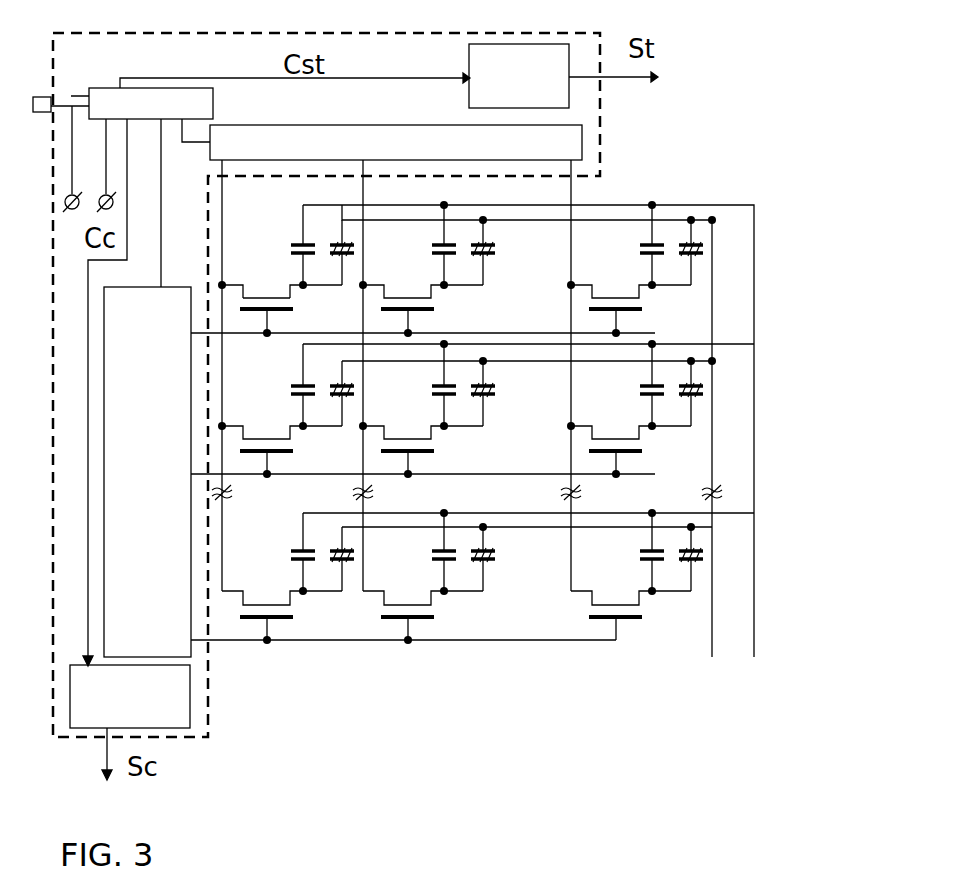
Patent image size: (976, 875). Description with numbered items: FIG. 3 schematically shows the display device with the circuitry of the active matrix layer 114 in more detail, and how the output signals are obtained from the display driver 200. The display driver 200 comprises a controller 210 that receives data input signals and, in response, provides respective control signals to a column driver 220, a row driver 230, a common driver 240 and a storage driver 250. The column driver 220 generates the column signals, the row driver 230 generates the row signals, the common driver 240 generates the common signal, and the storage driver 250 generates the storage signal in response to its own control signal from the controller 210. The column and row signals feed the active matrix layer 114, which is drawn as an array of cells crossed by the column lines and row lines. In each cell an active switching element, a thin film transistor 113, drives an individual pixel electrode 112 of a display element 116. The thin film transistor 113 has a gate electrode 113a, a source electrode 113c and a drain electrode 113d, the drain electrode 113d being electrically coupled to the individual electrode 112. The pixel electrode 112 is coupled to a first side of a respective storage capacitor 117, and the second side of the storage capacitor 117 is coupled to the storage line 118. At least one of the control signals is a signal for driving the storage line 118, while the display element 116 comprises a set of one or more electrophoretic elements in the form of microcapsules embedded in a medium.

The display driver 200 is at (116, 66).
The controller 210 is at (205, 93).
The column driver 220 is at (287, 137).
The row driver 230 is at (183, 640).
The common driver 240 is at (179, 705).
The storage driver 250 is at (478, 87).
The individual electrode 112 is at (315, 259).
The thin film transistor 113 is at (288, 289).
The gate electrode 113a is at (268, 327).
The source electrode 113c is at (232, 280).
The drain electrode 113d is at (290, 290).
The active matrix layer 114 is at (547, 460).
The display element 116 is at (371, 252).
The storage capacitor 117 is at (300, 241).
The storage line 118 is at (528, 415).